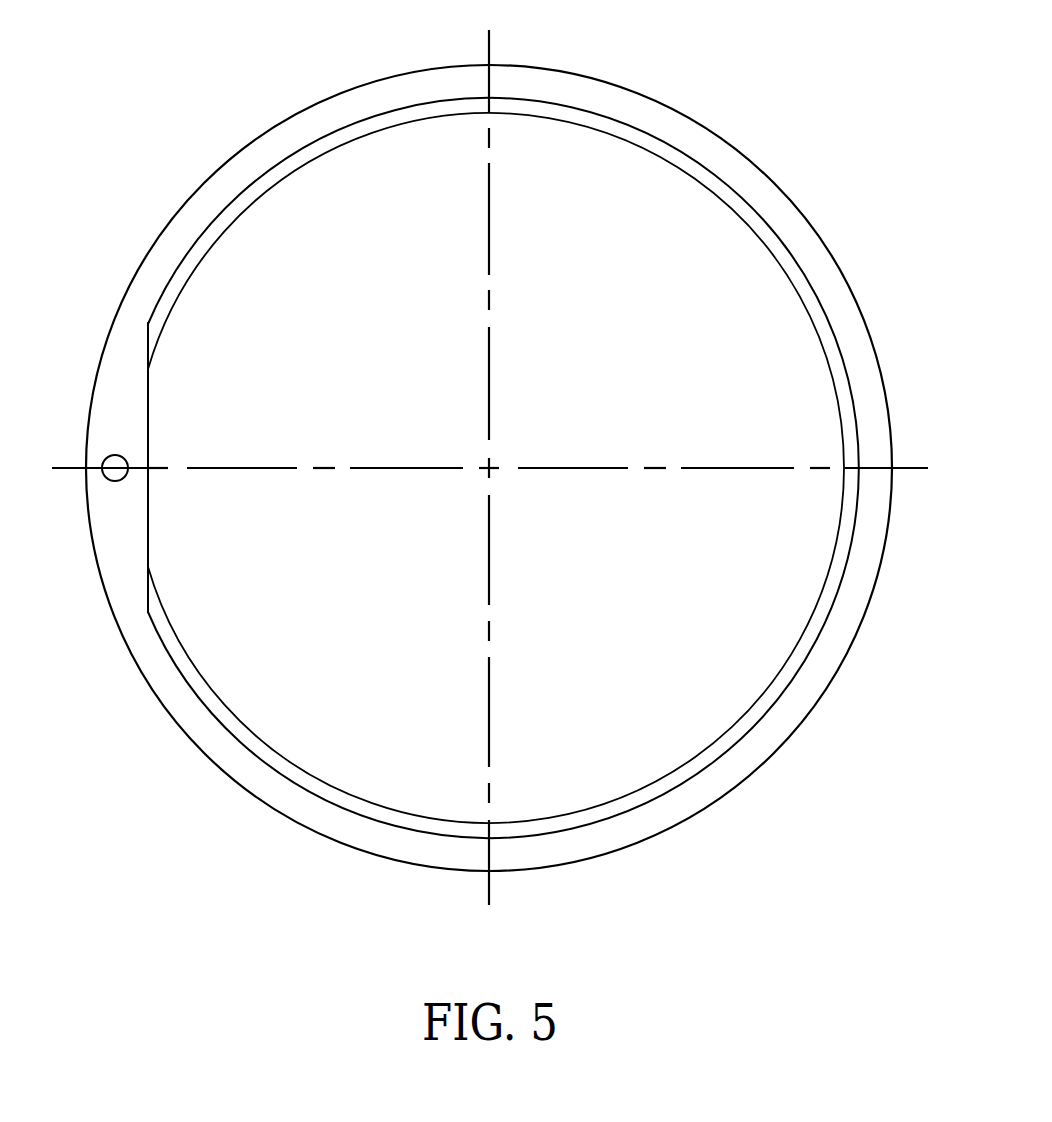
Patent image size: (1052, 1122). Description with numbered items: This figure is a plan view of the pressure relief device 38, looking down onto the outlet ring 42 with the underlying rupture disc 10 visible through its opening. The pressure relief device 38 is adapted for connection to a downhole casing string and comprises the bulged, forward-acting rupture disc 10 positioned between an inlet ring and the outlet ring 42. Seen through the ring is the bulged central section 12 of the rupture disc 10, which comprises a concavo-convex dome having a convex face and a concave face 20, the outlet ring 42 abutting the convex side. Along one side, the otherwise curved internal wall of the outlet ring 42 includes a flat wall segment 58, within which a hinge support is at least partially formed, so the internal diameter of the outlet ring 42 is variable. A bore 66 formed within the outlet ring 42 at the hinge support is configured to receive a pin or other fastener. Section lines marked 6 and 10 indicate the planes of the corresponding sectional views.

The section line 6- 6 is at (578, 30).
The rupture disc 10 is at (52, 557).
The bulged central section 12 is at (366, 739).
The concave face 20 is at (464, 518).
The pressure relief device 38 is at (128, 778).
The outlet ring 42 is at (158, 225).
The wall segment 58 is at (149, 428).
The bore 66 is at (124, 459).